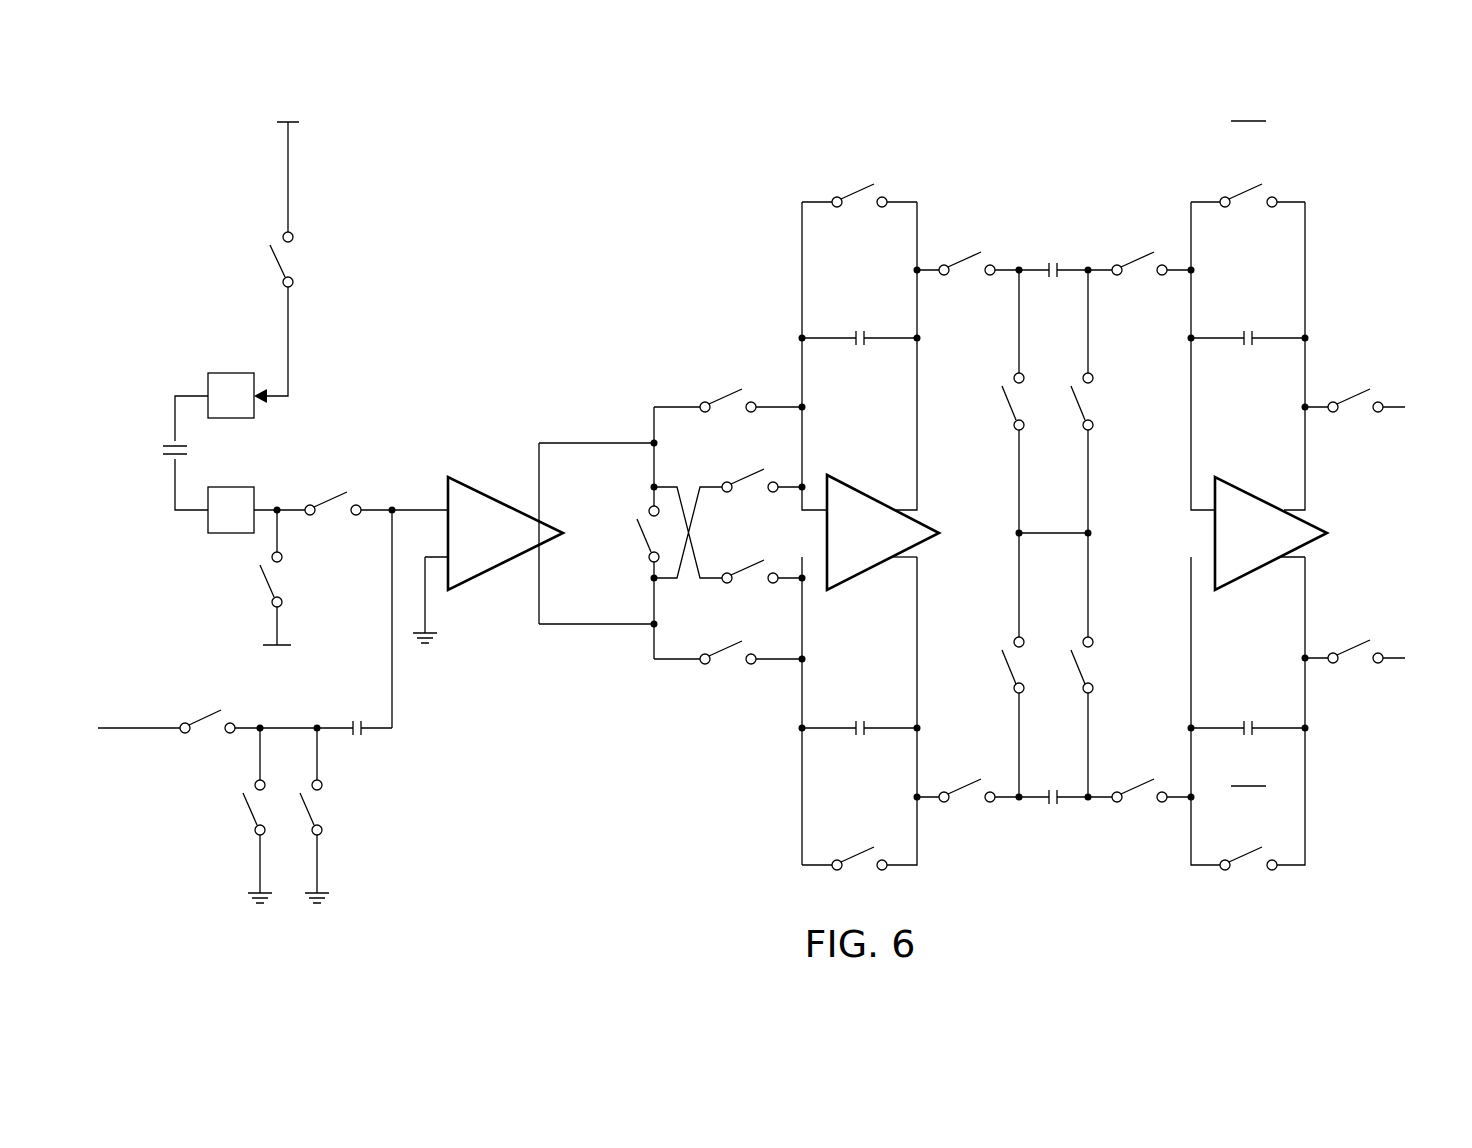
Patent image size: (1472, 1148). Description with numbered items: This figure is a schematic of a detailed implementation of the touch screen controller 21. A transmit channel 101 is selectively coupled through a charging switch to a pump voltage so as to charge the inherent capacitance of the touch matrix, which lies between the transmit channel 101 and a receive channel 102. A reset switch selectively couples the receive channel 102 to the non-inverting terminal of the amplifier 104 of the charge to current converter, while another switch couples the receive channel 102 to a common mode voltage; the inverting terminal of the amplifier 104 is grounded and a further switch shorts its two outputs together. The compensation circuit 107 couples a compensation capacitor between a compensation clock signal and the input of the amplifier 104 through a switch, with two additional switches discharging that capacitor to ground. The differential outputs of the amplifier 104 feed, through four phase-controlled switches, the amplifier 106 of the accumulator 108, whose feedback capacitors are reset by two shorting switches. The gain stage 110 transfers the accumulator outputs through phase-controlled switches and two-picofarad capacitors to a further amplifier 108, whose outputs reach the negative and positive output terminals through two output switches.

The touch screen controller 21 is at (497, 134).
The transmit channel 101 is at (230, 372).
The receive channel 102 is at (228, 486).
The amplifier 104 is at (488, 492).
The amplifier 106 is at (434, 394).
The compensation circuit 107 is at (414, 810).
The accumulator 108 is at (921, 134).
The gain stage 110 is at (1312, 130).